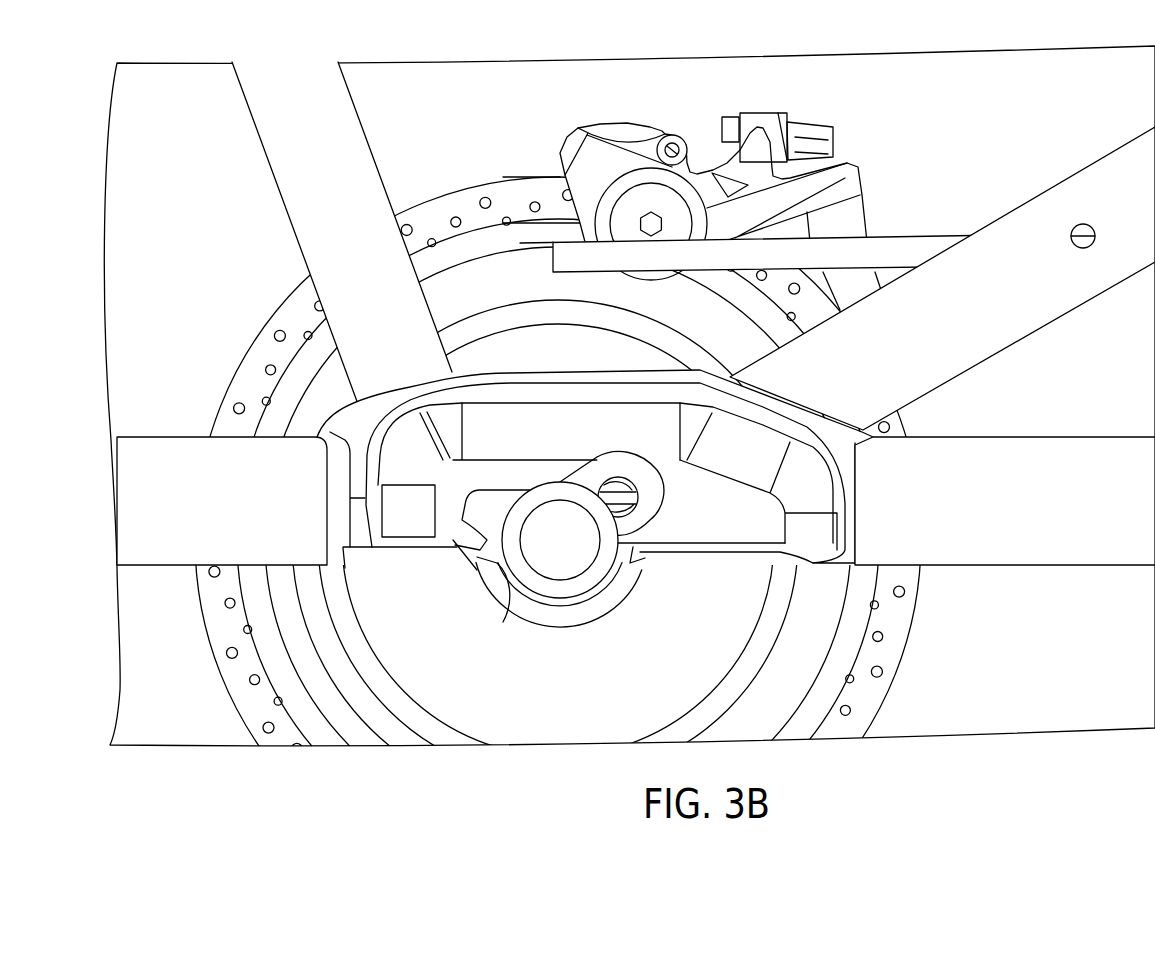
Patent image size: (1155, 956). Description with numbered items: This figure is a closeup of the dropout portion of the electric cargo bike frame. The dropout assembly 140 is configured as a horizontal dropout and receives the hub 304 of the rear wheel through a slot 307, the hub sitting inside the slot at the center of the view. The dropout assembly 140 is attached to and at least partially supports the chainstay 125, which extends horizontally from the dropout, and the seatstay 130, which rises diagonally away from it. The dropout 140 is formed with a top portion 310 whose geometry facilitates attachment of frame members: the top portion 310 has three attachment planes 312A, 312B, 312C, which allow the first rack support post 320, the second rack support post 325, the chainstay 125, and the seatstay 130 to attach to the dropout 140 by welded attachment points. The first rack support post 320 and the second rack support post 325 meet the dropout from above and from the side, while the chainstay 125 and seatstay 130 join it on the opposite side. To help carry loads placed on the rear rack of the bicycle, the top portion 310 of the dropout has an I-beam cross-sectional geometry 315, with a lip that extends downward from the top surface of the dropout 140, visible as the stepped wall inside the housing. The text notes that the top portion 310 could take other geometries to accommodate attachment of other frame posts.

The dropout assembly 140 is at (205, 247).
The first rack support post 320 is at (280, 128).
The top portion 310 is at (577, 380).
The attachment plane 312A is at (337, 414).
The attachment plane 312B is at (482, 380).
The attachment plane 312C is at (778, 403).
The I-beam cross-sectional geometry 315 is at (465, 430).
The hub 304 is at (517, 588).
The slot 307 is at (630, 578).
The second rack support post 325 is at (178, 448).
The chainstay 125 is at (1043, 552).
The seatstay 130 is at (1042, 308).